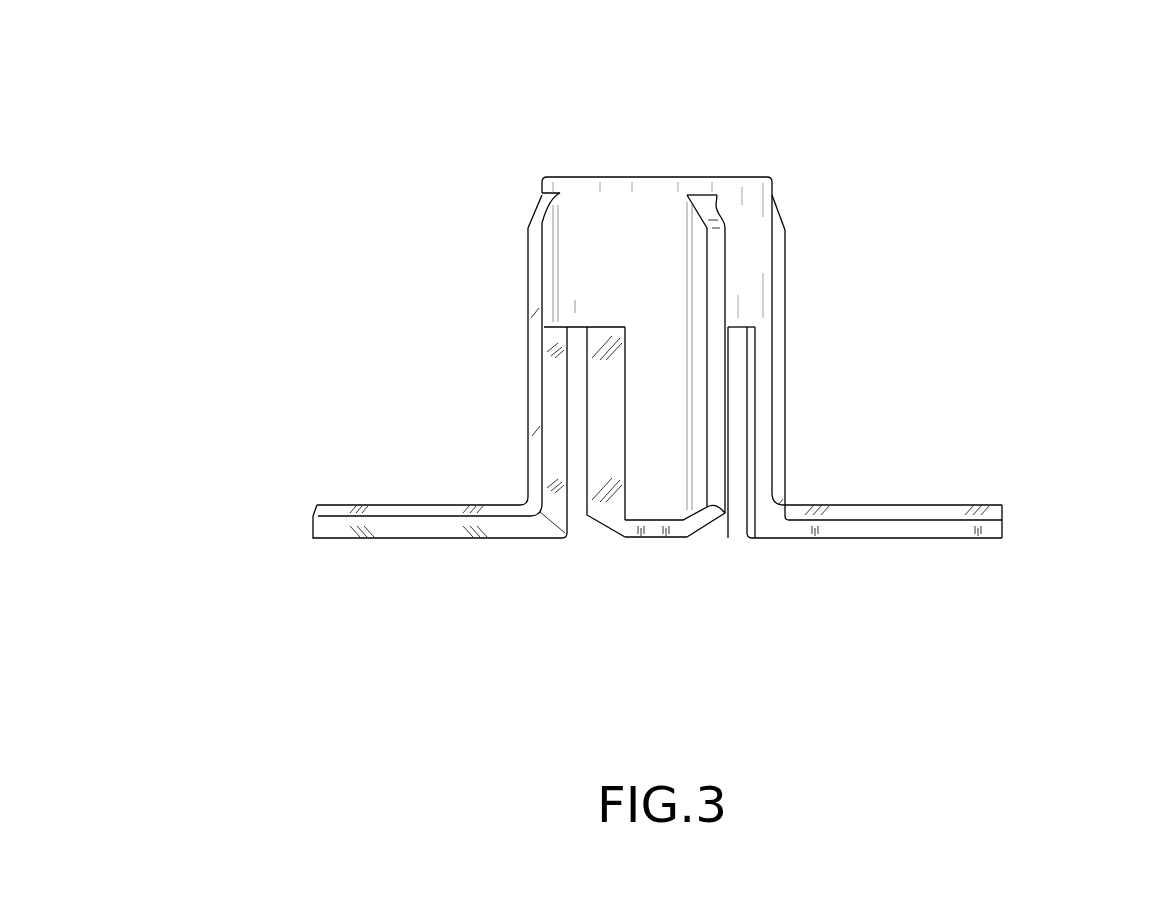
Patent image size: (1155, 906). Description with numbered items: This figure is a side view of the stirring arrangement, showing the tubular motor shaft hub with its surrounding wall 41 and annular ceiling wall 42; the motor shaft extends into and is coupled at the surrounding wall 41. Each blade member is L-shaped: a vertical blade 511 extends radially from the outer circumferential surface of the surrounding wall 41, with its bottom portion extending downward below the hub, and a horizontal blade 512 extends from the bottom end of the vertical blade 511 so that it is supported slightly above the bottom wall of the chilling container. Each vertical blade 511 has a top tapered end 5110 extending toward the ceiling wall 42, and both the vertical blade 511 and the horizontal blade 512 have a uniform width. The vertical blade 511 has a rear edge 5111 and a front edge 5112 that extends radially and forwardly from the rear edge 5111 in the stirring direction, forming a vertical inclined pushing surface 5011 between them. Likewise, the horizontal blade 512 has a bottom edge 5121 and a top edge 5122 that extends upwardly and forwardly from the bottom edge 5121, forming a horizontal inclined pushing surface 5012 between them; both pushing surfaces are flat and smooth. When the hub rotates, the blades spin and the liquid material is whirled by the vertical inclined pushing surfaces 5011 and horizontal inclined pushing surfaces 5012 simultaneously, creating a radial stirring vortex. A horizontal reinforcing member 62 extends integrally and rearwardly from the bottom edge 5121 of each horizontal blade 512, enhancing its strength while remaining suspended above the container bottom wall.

The surrounding wall 41 is at (620, 203).
The annular ceiling wall 42 is at (602, 172).
The vertical inclined pushing surface 5011 is at (548, 283).
The horizontal inclined pushing surface 5012 is at (403, 528).
The vertical blade 511 is at (535, 370).
The top tapered end 5110 is at (533, 205).
The rear edge 5111 is at (695, 342).
The front edge 5112 is at (718, 290).
The horizontal blade 512 is at (710, 517).
The bottom edge 5121 is at (458, 538).
The top edge 5122 is at (317, 513).
The horizontal reinforcing member 62 is at (632, 530).